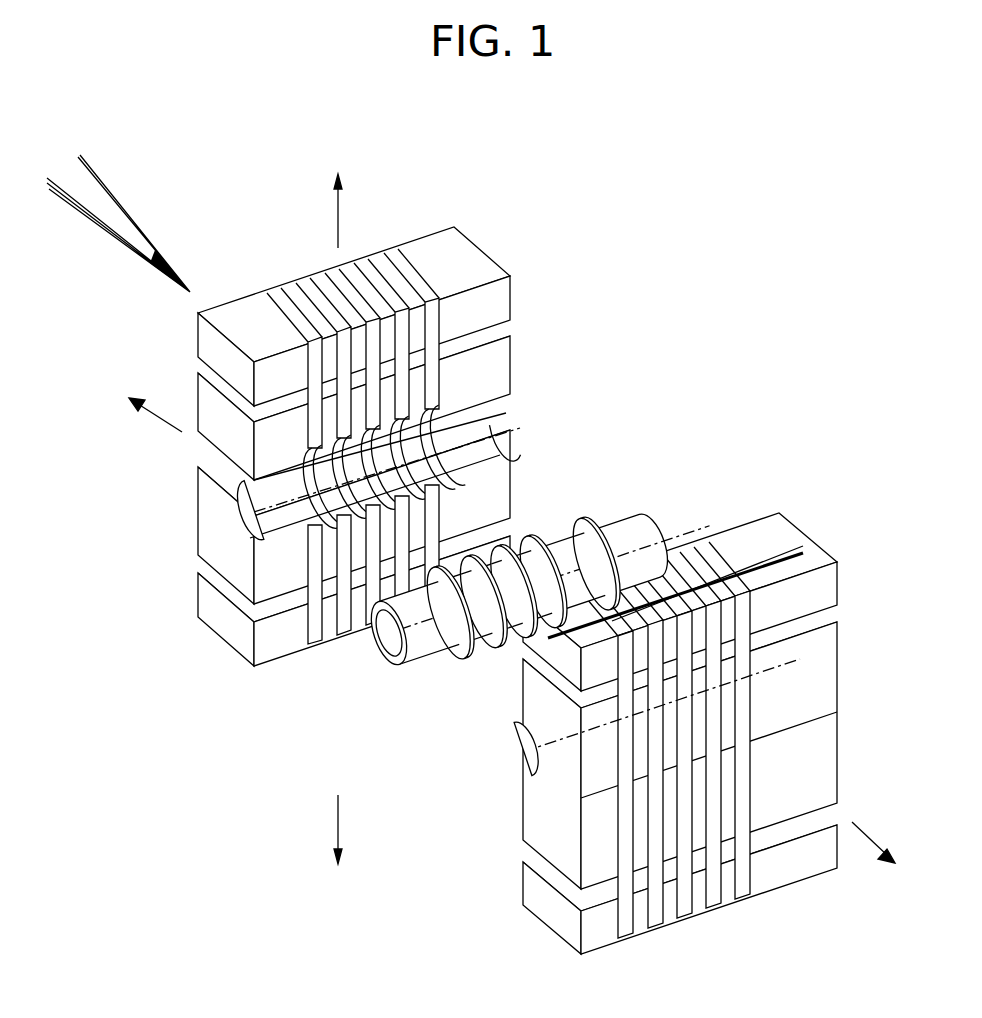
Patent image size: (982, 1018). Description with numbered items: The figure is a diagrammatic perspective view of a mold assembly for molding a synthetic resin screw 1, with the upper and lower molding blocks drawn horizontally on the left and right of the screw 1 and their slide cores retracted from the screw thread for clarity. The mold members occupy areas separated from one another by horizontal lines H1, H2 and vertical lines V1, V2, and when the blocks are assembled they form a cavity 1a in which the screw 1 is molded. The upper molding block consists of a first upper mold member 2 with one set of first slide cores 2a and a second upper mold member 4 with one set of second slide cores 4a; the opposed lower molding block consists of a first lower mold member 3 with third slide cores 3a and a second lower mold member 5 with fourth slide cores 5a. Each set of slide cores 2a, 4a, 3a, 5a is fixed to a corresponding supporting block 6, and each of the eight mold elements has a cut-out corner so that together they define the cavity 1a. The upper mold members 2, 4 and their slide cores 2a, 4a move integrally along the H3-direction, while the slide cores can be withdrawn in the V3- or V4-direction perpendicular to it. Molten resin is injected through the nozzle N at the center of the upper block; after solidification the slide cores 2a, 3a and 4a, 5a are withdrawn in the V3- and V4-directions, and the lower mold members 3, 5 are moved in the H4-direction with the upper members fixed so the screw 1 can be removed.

The synthetic resin screw 1 is at (393, 662).
The cavity 1a is at (500, 446).
The first upper mold member 2 is at (500, 378).
The first slide cores 2a is at (421, 288).
The first lower mold member 3 is at (540, 697).
The third slide cores 3a is at (716, 560).
The second upper mold member 4 is at (215, 533).
The second slide cores 4a is at (318, 642).
The second lower mold member 5 is at (542, 815).
The fourth slide cores 5a is at (623, 918).
The supporting block 6 is at (432, 248).
The nozzle N is at (127, 227).
The vertical line V1 is at (268, 646).
The vertical line V2 is at (390, 668).
The V3-direction V3 is at (319, 197).
The V4-direction V4 is at (347, 851).
The horizontal line H1 is at (420, 652).
The horizontal line H2 is at (376, 636).
The H3-direction H3 is at (154, 399).
The H4-direction H4 is at (881, 862).